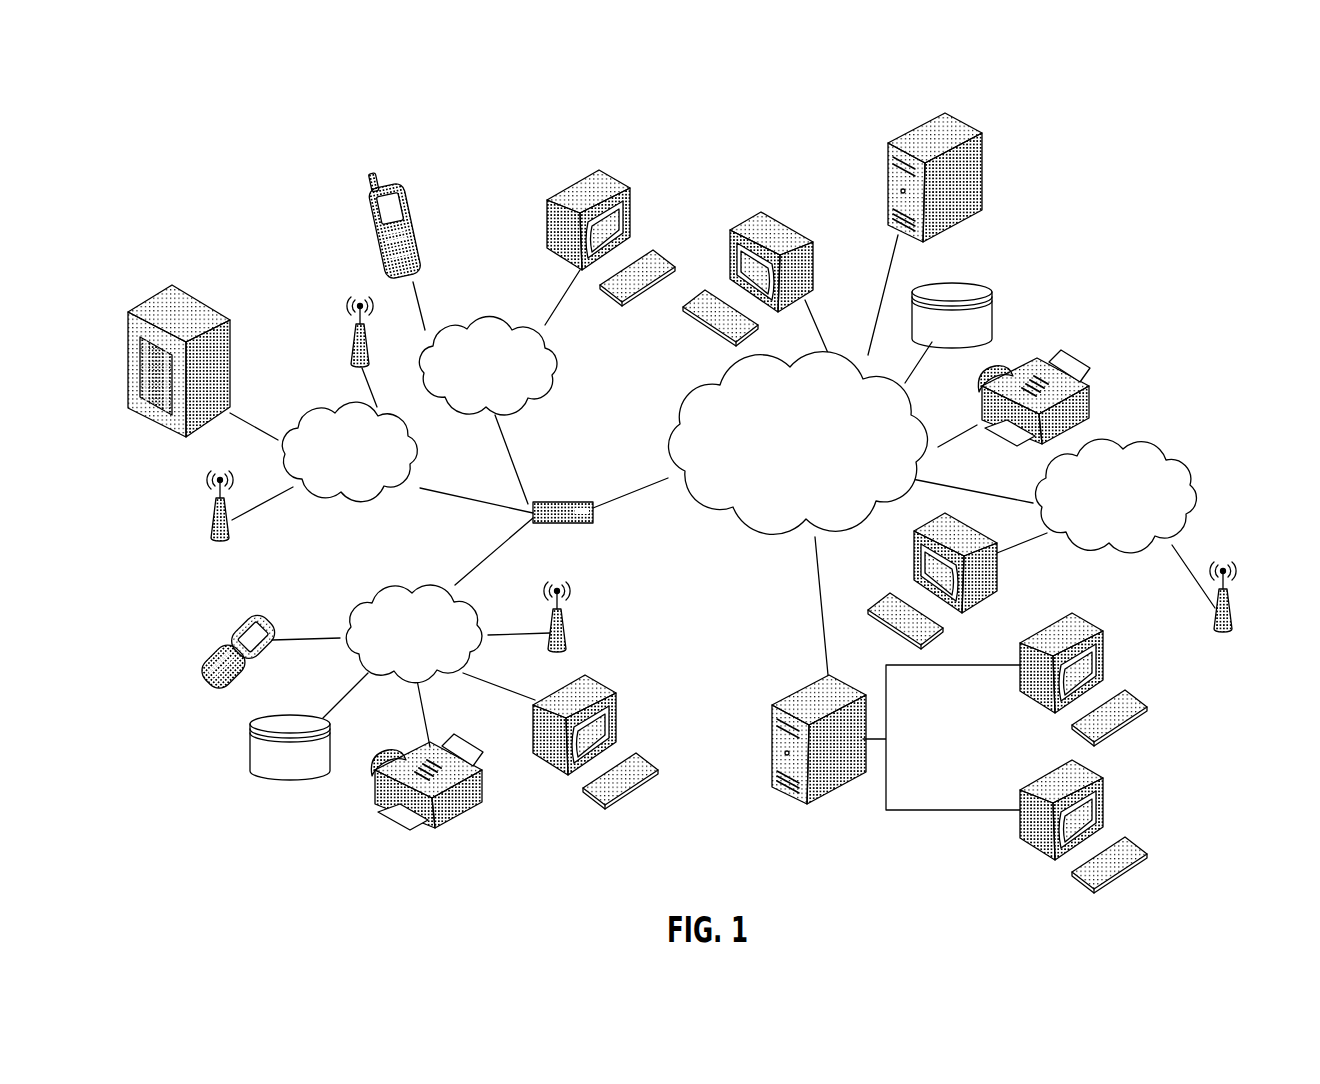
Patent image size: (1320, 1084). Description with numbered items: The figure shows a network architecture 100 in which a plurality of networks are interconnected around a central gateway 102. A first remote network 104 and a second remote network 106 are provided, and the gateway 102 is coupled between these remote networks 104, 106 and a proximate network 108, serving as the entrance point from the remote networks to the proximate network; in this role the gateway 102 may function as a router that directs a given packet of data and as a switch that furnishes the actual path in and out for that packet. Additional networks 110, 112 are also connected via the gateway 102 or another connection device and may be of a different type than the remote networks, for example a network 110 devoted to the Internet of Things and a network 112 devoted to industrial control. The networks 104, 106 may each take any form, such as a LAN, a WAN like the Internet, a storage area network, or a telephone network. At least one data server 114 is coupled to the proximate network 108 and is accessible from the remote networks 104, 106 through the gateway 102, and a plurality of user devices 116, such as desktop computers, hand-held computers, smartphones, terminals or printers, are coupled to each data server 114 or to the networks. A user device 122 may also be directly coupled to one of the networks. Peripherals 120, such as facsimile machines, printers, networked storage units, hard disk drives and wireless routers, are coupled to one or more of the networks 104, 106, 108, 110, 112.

The network architecture 100 is at (732, 130).
The gateway 102 is at (548, 500).
The first remote network 104 is at (346, 607).
The second remote network 106 is at (560, 371).
The proximate network 108 is at (723, 535).
The additional network 110 is at (292, 412).
The additional network 112 is at (1197, 465).
The data server 114 is at (983, 172).
The user device 116 is at (423, 229).
The peripheral 120 is at (224, 316).
The user device 122 is at (812, 247).